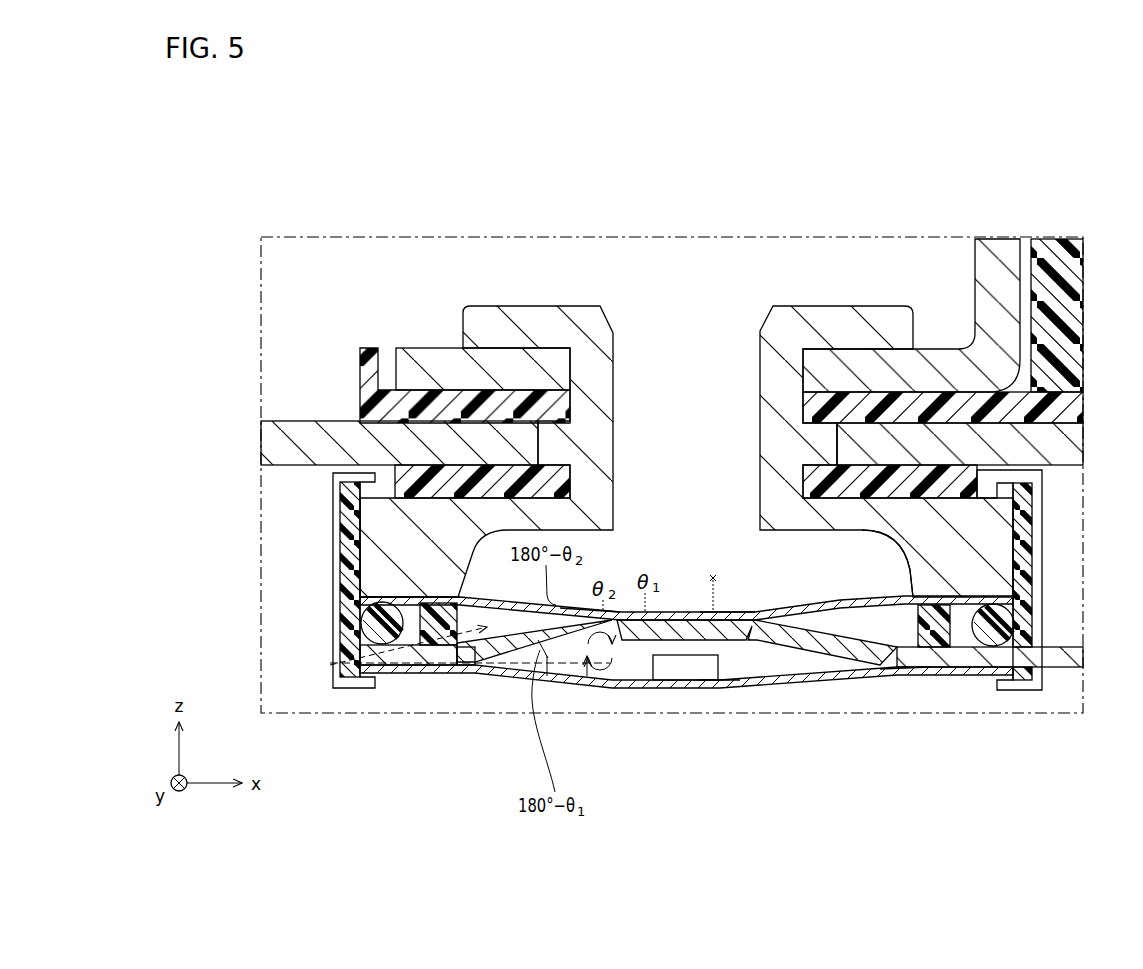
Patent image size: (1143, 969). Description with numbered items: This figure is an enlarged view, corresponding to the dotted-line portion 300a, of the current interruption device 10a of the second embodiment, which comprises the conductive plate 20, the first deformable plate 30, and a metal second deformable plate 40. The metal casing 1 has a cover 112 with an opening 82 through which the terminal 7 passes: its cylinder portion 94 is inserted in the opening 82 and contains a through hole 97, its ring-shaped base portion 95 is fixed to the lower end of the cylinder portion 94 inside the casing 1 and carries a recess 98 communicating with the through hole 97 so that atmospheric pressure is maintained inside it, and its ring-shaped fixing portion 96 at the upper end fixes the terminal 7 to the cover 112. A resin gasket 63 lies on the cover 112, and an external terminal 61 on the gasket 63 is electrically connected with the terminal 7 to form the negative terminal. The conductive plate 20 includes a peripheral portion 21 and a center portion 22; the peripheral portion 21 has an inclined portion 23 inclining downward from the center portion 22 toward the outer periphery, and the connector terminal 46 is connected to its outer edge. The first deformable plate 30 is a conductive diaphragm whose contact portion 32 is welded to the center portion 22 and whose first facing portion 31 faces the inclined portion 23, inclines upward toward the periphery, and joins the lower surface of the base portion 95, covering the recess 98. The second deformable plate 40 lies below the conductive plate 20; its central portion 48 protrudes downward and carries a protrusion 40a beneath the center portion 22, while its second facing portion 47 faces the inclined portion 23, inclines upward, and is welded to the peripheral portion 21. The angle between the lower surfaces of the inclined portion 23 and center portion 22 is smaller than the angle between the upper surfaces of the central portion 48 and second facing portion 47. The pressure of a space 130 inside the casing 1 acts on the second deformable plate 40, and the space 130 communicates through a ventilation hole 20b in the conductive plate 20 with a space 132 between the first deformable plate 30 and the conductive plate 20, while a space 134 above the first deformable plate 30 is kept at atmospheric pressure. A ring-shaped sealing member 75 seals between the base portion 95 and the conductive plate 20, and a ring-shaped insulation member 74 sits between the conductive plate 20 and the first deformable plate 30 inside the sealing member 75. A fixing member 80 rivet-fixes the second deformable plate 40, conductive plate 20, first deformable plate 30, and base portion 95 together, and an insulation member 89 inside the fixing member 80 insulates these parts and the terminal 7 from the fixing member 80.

The housing boundary 300a is at (325, 237).
The casing 1 is at (615, 447).
The cover 112 is at (270, 452).
The terminal 7 is at (486, 378).
The cylinder portion 94 is at (585, 372).
The base portion 95 is at (415, 508).
The fixing portion 96 is at (530, 318).
The through hole 97 is at (760, 400).
The recess 98 is at (867, 533).
The external terminal 61 is at (1003, 315).
The gasket 63 is at (962, 402).
The opening 82 is at (832, 437).
The fixing member 80 is at (333, 497).
The insulation member 89 is at (350, 563).
The sealing member 75 is at (1023, 632).
The insulation member 74 is at (935, 645).
The ventilation hole 20b is at (466, 667).
The connector terminal 46 is at (1058, 660).
The second deformable plate 40 is at (686, 707).
The central portion 48 is at (740, 622).
The second facing portion 47 is at (810, 678).
The protrusion 40a is at (728, 684).
The current interruption device 10a is at (909, 690).
The space 130 is at (817, 665).
The conductive plate 20 is at (677, 711).
The peripheral portion 21 is at (585, 657).
The center portion 22 is at (655, 640).
The space 134 is at (678, 676).
The space 132 is at (330, 663).
The inclined portion 23 is at (462, 595).
The first deformable plate 30 is at (657, 387).
The first facing portion 31 is at (570, 610).
The contact portion 32 is at (732, 610).